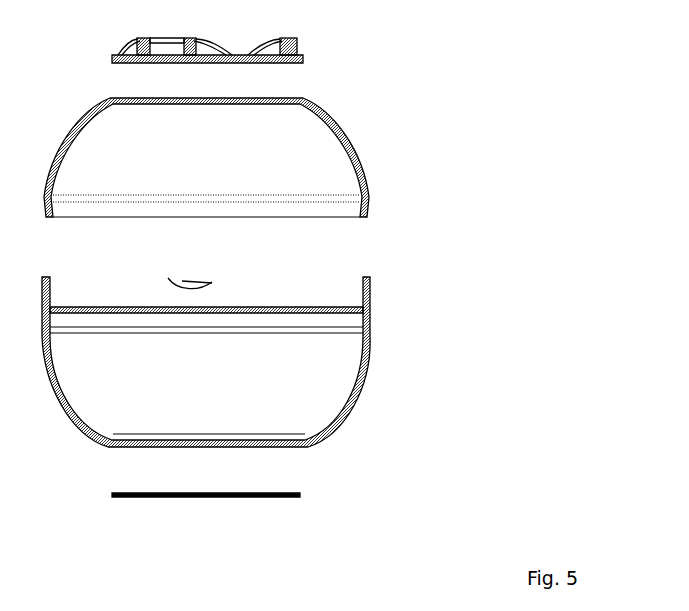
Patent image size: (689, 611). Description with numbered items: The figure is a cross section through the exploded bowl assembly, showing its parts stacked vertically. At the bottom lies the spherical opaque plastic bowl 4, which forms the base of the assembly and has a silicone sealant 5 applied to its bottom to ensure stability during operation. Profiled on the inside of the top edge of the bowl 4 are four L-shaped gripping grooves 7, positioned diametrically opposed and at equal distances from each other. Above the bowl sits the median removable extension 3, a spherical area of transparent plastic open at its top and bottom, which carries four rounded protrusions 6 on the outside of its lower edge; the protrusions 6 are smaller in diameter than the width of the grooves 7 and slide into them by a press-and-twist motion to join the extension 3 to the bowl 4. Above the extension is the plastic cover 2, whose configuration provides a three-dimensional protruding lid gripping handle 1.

The lid gripping handle 1 is at (293, 39).
The plastic cover 2 is at (305, 63).
The median removable extension 3 is at (341, 133).
The opaque plastic bowl 4 is at (308, 376).
The silicone sealant 5 is at (301, 493).
The protrusions 6 is at (306, 209).
The L-shaped gripping grooves 7 is at (196, 283).